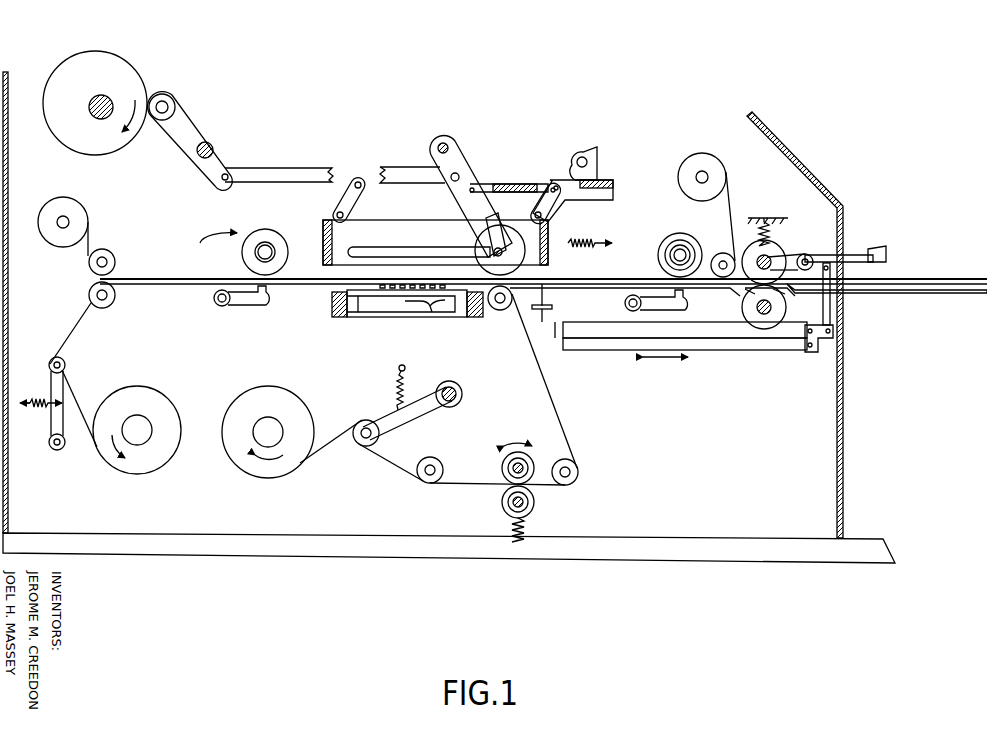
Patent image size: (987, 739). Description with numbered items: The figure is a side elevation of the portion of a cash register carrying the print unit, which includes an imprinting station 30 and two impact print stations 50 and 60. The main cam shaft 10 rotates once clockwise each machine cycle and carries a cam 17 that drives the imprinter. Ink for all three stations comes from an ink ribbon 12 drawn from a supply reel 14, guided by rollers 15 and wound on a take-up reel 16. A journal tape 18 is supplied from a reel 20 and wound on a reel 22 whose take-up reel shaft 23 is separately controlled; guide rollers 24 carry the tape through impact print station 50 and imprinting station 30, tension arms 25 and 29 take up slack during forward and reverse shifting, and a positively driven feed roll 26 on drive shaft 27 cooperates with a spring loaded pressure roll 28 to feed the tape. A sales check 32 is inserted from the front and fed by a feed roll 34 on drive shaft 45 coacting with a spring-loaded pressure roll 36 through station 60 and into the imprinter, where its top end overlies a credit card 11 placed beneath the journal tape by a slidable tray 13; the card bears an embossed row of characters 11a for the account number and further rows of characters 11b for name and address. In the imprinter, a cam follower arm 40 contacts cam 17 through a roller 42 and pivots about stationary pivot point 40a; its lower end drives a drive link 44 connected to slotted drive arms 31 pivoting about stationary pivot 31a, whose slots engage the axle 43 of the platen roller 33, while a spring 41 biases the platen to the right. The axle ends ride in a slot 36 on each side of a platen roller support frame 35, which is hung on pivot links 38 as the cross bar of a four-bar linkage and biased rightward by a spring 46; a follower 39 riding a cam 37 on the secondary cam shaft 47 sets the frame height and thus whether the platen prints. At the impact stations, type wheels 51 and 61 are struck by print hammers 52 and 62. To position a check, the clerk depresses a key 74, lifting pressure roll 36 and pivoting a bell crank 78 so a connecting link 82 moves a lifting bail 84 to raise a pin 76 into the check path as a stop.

The main cam shaft 10 is at (118, 96).
The credit card 11 is at (351, 318).
The row of characters 11a is at (381, 318).
The rows of characters 11b is at (430, 318).
The ink ribbon 12 is at (133, 277).
The slidable tray 13 is at (405, 318).
The supply reel 14 is at (76, 204).
The guide rollers 15 is at (105, 249).
The take-up reel 16 is at (700, 154).
The cam 17 is at (90, 51).
The journal tape 18 is at (70, 320).
The reel 20 is at (165, 400).
The reel 22 is at (275, 386).
The take-up reel shaft 23 is at (285, 424).
The guide rollers 24 is at (116, 296).
The tension arm 25 is at (66, 366).
The feed roll 26 is at (502, 466).
The drive shaft 27 is at (531, 458).
The pressure roll 28 is at (537, 502).
The tension arm 29 is at (424, 422).
The imprinting station 30 is at (480, 142).
The slotted drive arm 31 is at (441, 190).
The stationary pivot 31a is at (443, 137).
The sales check 32 is at (800, 290).
The platen roller 33 is at (527, 266).
The feed roll 34 is at (766, 328).
The platen roller support frame 35 is at (367, 220).
The slot 36 is at (358, 246).
The cam 37 is at (600, 150).
The pivot links 38 is at (339, 187).
The follower 39 is at (606, 180).
The cam follower arm 40 is at (191, 120).
The stationary pivot point 40a is at (212, 148).
The spring 41 is at (497, 183).
The roller 42 is at (164, 94).
The axle 43 is at (470, 252).
The drive link 44 is at (297, 166).
The drive shaft 45 is at (756, 306).
The spring 46 is at (597, 242).
The secondary cam shaft 47 is at (579, 150).
The impact print station 50 is at (207, 240).
The type wheels 51 is at (264, 229).
The print hammer 52 is at (254, 310).
The impact print station 60 is at (670, 236).
The type wheels 61 is at (660, 257).
The print hammer 62 is at (672, 311).
The key 74 is at (876, 249).
The pin 76 is at (553, 307).
The bell crank 78 is at (812, 355).
The connecting link 82 is at (610, 351).
The lifting bail 84 is at (566, 330).